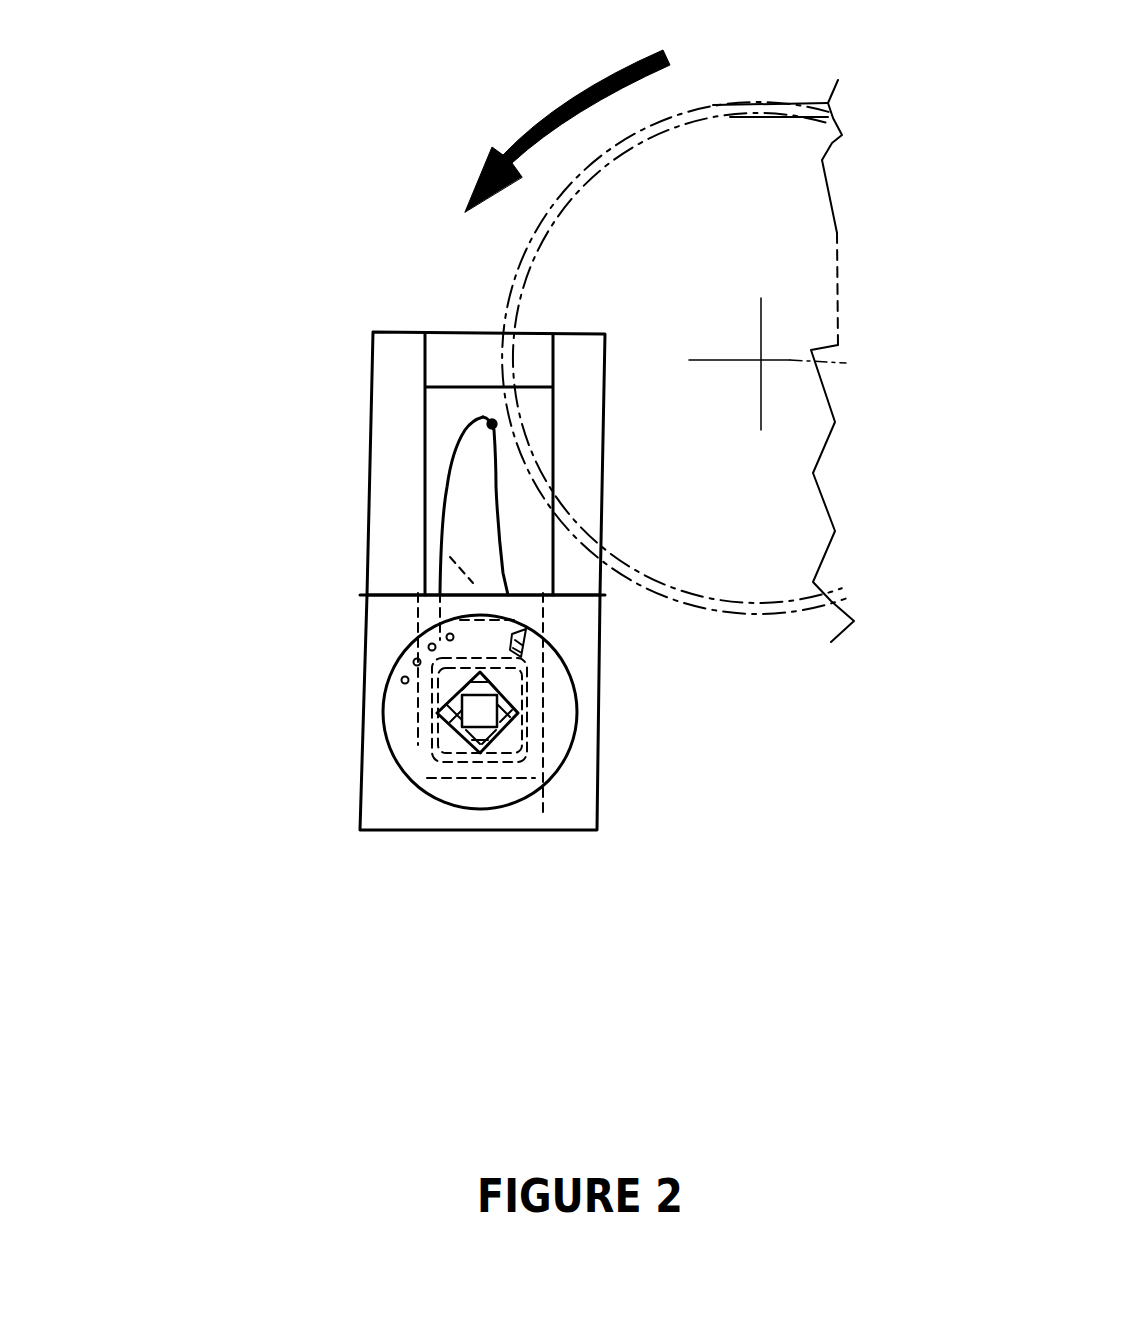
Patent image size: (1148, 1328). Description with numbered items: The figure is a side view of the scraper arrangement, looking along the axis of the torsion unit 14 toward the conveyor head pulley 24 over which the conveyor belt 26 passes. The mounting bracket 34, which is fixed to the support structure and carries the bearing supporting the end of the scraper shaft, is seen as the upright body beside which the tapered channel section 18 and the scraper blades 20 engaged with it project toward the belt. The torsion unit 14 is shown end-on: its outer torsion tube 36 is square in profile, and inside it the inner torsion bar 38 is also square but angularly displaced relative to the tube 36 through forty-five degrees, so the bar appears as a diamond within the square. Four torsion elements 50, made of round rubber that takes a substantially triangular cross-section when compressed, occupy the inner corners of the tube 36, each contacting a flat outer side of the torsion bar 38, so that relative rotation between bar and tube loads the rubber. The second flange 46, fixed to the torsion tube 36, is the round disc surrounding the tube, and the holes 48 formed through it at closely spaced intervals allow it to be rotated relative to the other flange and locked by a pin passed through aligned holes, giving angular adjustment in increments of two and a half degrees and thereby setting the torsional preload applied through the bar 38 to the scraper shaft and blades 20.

The torsion unit 14 is at (280, 725).
The tapered channel section 18 is at (526, 632).
The scraper blades 20 is at (465, 453).
The conveyor head pulley 24 is at (790, 204).
The conveyor belt 26 is at (727, 106).
The mounting bracket 34 is at (373, 432).
The outer torsion tube 36 is at (445, 725).
The inner torsion bar 38 is at (500, 735).
The second flange 46 is at (563, 732).
The holes 48 is at (400, 676).
The torsion elements 50 is at (487, 717).